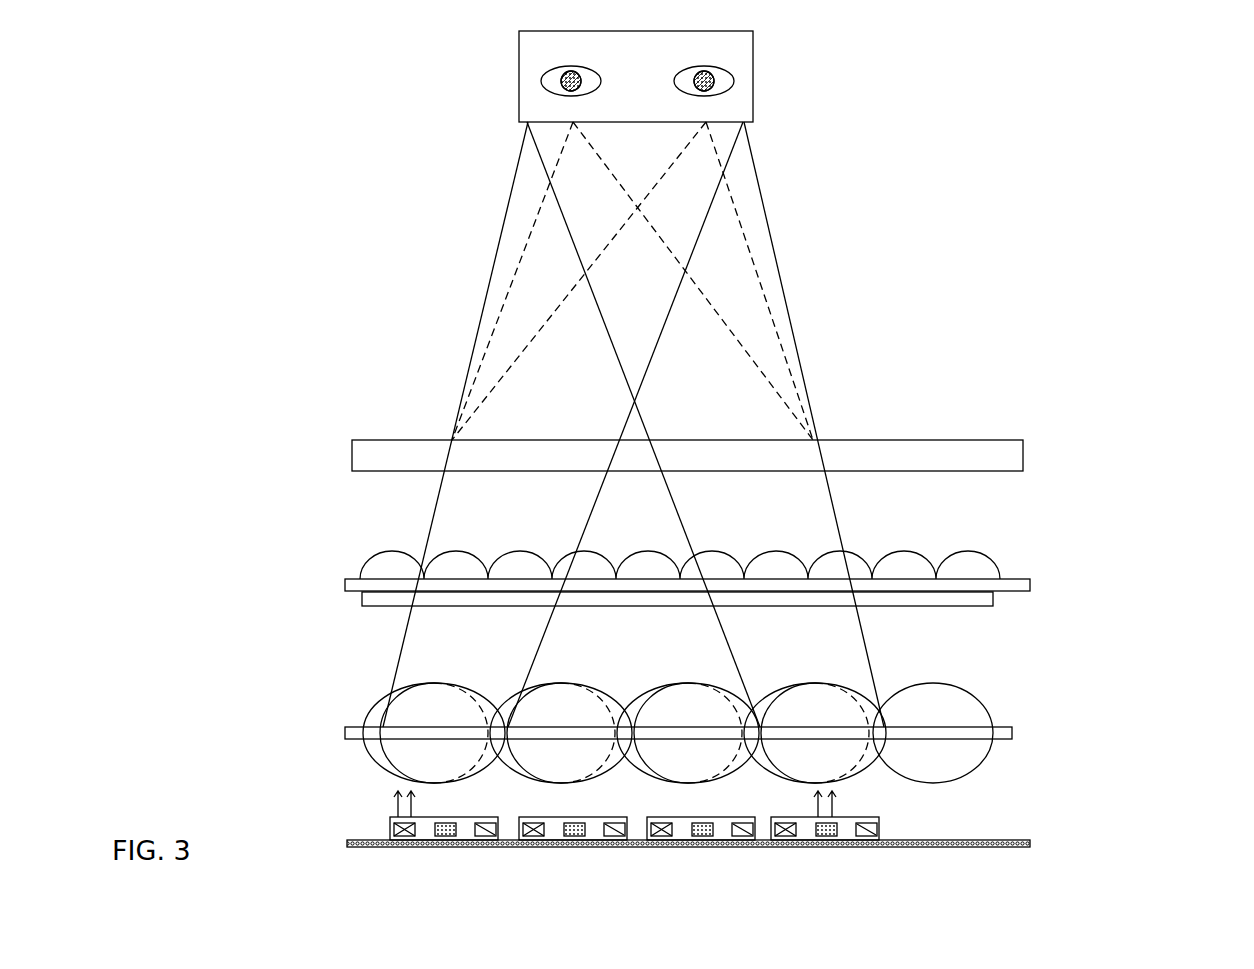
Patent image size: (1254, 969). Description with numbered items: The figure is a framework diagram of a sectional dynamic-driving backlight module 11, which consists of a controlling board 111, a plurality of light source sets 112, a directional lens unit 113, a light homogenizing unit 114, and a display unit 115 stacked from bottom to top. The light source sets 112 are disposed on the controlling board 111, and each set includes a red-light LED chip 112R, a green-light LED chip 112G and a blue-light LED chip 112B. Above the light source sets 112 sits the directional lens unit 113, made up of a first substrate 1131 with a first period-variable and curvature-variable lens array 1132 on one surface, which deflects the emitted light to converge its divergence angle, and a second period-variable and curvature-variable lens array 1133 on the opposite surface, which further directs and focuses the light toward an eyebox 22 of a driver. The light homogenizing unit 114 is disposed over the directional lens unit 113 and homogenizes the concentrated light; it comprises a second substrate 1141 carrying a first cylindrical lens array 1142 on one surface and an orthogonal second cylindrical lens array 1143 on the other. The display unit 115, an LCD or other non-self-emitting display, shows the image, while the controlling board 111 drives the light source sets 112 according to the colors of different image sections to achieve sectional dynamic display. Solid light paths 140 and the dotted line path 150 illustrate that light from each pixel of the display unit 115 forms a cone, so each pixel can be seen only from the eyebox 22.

The eyebox 22 is at (753, 63).
The light beams 140 is at (482, 303).
The dotted line path 150 is at (505, 325).
The sectional dynamic-driving backlight module 11 is at (1023, 363).
The display unit 115 is at (378, 460).
The light homogenizing unit 114 is at (780, 586).
The second cylindrical lens array 1143 is at (993, 572).
The second substrate 1141 is at (1030, 588).
The first cylindrical lens array 1142 is at (755, 629).
The directional lens unit 113 is at (587, 731).
The second period-variable and curvature-variable lens array 1133 is at (368, 710).
The first substrate 1131 is at (345, 733).
The first period-variable and curvature-variable lens array 1132 is at (368, 752).
The light source sets 112 is at (690, 838).
The blue-light LED chip 112B is at (785, 840).
The red-light LED chip 112R is at (825, 843).
The green-light LED chip 112G is at (880, 822).
The controlling board 111 is at (1035, 838).